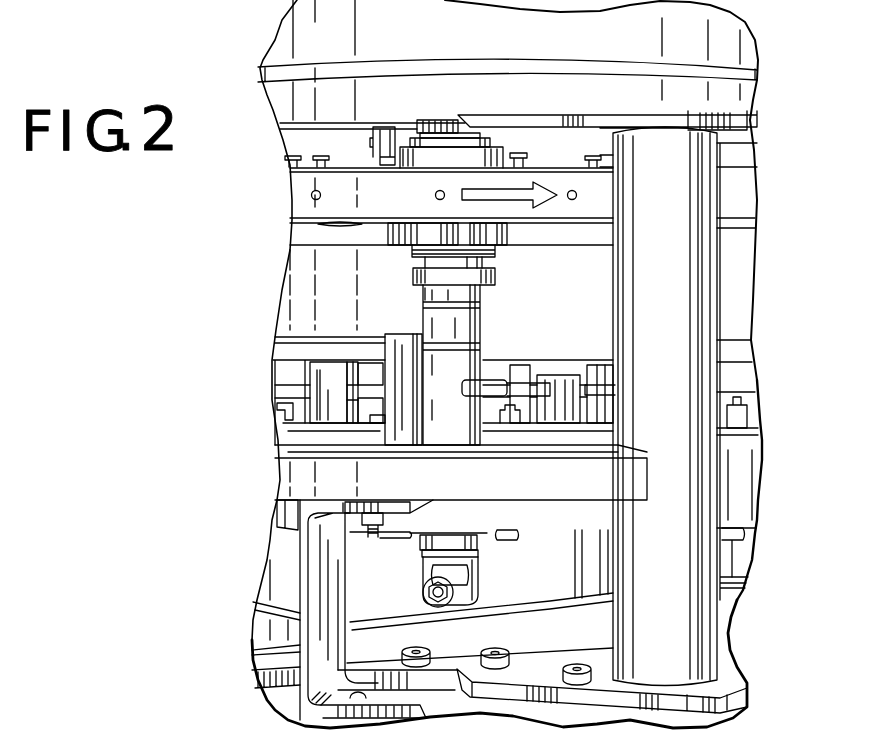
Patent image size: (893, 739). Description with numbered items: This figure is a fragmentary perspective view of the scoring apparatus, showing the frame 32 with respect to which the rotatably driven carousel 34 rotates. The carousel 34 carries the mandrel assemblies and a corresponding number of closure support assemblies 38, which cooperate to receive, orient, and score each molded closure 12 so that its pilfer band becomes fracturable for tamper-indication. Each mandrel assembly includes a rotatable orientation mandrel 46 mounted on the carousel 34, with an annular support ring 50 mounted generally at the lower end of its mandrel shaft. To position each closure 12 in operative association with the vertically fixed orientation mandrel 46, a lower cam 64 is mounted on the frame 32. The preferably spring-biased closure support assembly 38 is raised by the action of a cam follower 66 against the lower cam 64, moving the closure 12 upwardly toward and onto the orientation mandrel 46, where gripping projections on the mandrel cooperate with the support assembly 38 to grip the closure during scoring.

The closure 12 is at (490, 319).
The frame 32 is at (685, 310).
The carousel 34 is at (407, 204).
The closure support assembly 38 is at (410, 550).
The orientation mandrel 46 is at (390, 262).
The annular support ring 50 is at (415, 281).
The lower cam 64 is at (499, 604).
The cam follower 66 is at (457, 603).